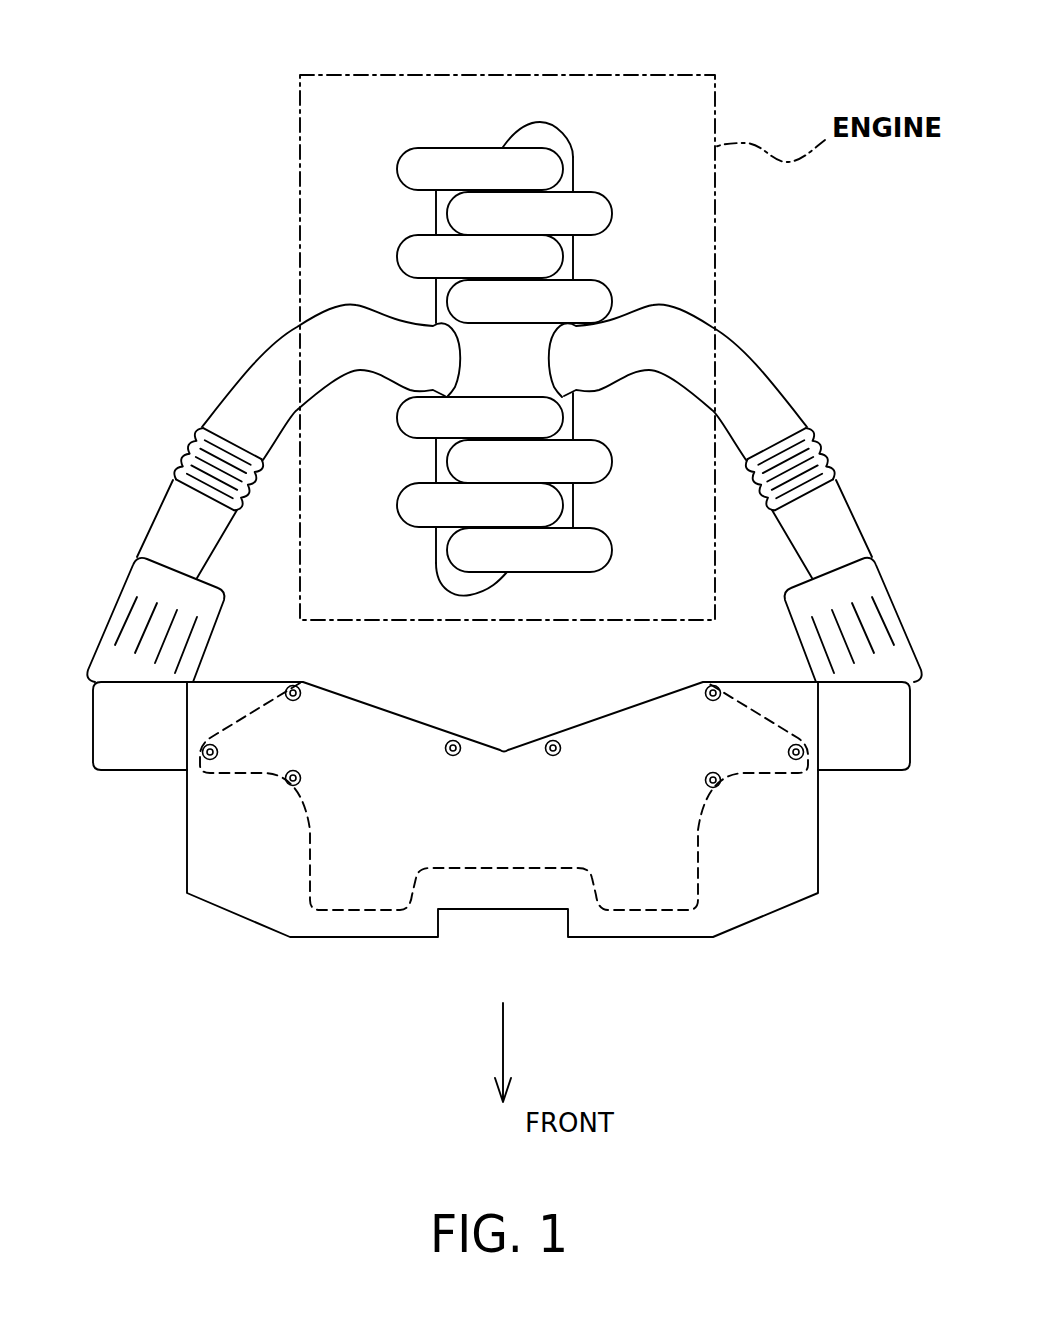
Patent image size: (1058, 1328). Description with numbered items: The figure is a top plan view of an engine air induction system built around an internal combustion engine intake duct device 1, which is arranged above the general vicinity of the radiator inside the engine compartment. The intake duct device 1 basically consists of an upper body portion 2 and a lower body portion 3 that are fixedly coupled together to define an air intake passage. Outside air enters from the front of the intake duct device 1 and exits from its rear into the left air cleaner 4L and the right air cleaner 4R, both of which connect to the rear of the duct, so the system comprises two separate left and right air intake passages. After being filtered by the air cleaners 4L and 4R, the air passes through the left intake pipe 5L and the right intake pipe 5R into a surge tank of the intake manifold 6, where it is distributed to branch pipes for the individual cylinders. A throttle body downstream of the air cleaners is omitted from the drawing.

The intake duct device 1 is at (163, 880).
The upper body portion 2 is at (250, 910).
The lower body portion 3 is at (333, 910).
The right air cleaner 4R is at (123, 582).
The left air cleaner 4L is at (886, 582).
The right intake pipe 5R is at (265, 352).
The left intake pipe 5L is at (744, 352).
The intake manifold 6 is at (543, 120).